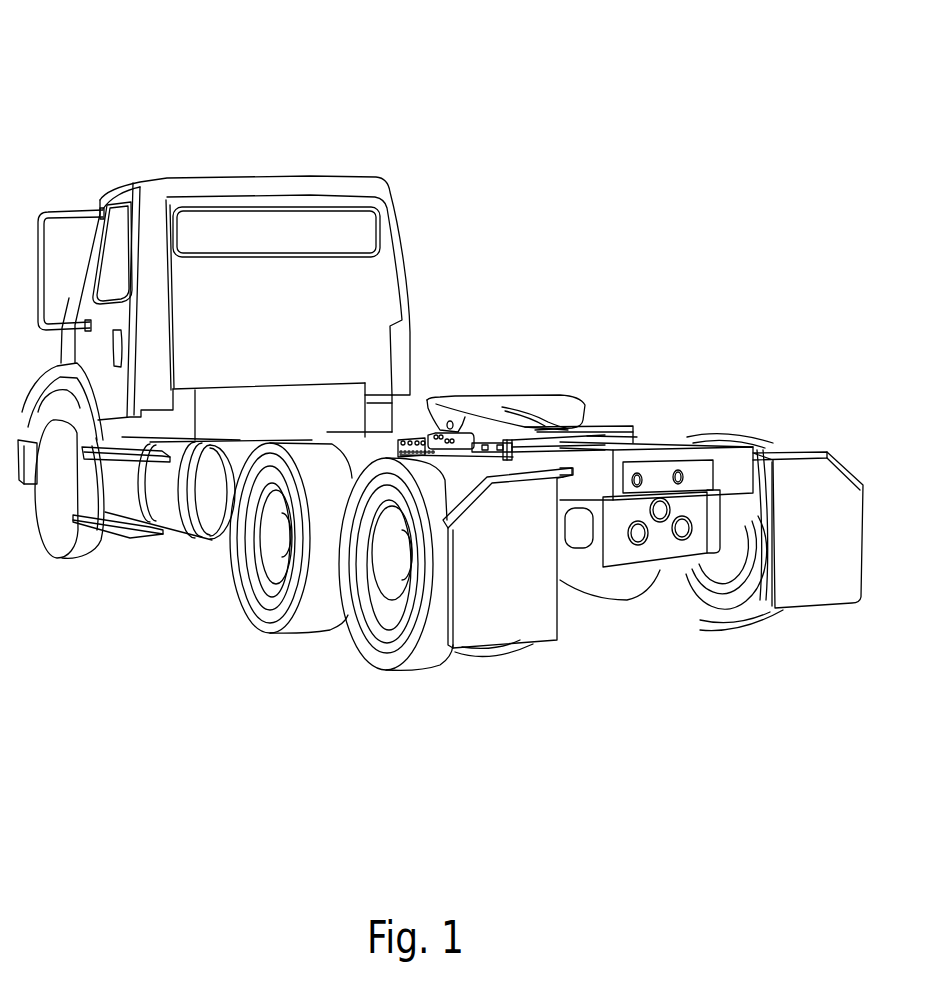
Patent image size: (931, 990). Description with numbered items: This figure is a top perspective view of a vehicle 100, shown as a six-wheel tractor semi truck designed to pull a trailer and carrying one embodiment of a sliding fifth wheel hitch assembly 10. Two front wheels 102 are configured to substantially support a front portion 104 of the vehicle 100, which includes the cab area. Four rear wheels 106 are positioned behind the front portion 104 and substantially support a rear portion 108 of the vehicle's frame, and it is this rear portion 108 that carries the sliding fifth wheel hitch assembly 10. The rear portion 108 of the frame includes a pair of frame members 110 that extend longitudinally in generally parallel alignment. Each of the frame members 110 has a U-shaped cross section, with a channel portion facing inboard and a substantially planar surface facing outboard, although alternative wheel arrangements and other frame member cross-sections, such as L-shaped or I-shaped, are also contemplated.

The vehicle 100 is at (0, 0).
The front portion 104 is at (0, 0).
The front wheels 102 is at (60, 540).
The rear portion 108 is at (546, 612).
The sliding fifth wheel hitch assembly 10 is at (519, 373).
The rear wheels 106 is at (358, 455).
The frame members 110 is at (733, 475).